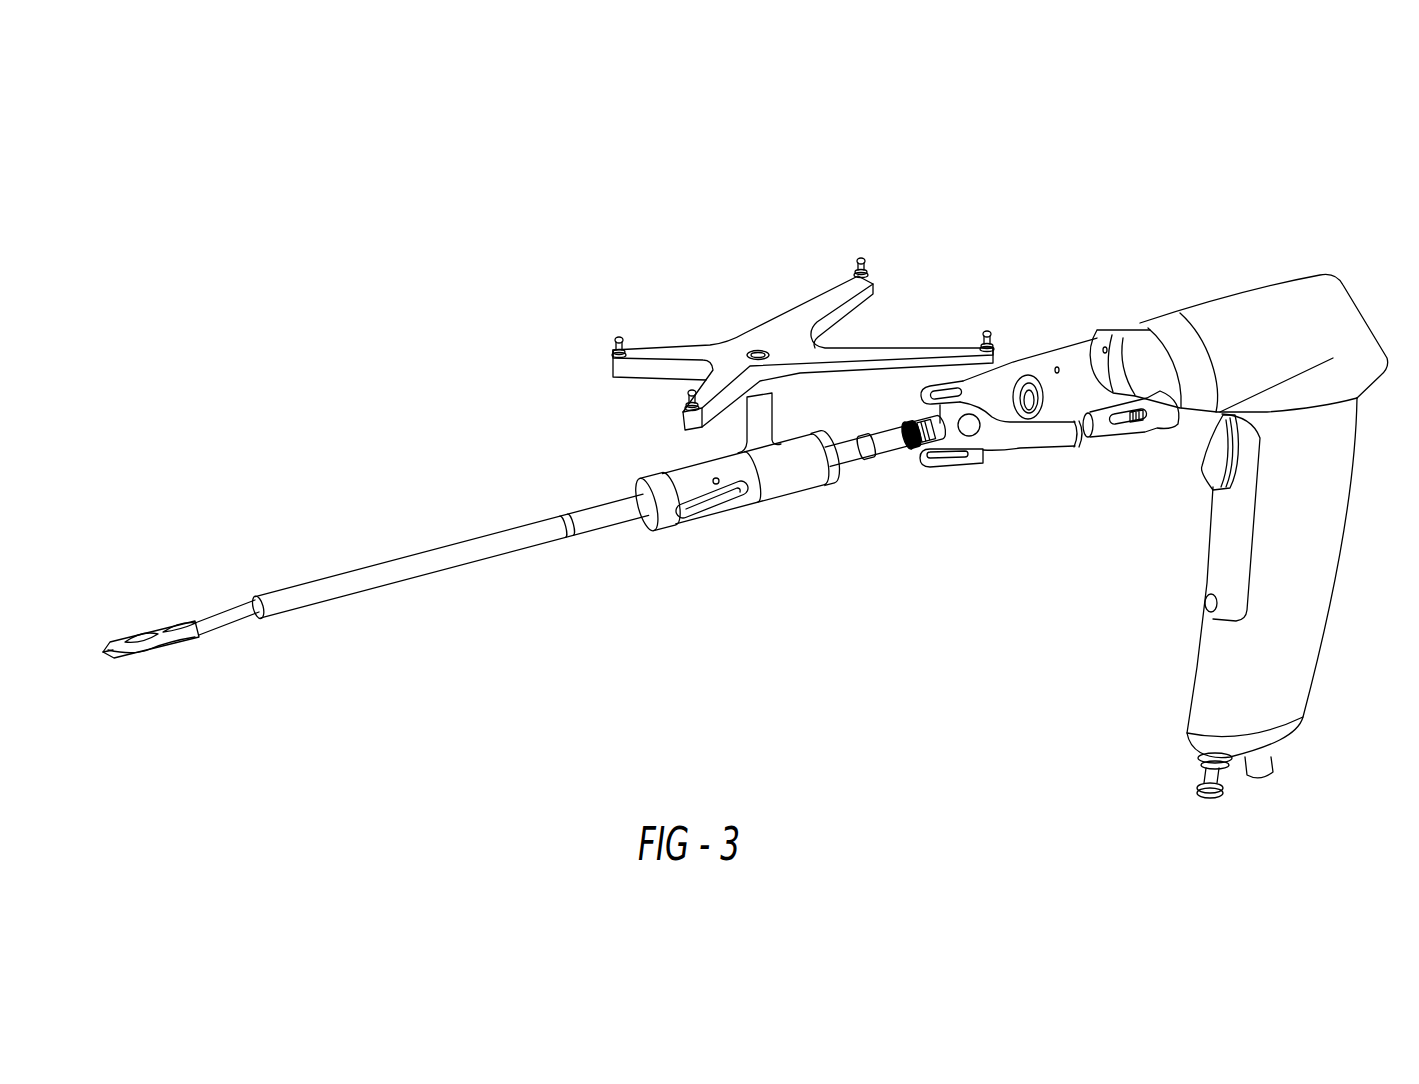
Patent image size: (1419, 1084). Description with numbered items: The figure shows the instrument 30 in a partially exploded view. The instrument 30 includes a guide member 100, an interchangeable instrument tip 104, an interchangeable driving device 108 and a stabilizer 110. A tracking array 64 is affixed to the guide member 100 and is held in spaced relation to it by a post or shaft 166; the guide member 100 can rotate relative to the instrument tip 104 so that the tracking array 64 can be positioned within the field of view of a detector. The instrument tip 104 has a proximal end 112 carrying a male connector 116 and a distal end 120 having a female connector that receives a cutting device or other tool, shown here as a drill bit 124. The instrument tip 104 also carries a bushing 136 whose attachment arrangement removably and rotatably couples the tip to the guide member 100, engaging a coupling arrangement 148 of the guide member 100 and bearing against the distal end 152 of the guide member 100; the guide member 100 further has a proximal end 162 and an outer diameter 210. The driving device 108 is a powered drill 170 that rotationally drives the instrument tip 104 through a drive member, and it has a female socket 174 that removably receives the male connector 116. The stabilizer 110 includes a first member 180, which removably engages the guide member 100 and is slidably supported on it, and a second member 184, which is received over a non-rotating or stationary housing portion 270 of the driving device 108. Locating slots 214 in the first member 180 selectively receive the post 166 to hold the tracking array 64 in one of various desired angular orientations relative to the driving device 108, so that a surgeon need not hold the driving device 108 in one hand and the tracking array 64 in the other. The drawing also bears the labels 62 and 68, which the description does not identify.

The instrument 30 is at (452, 331).
The cross-shaped bracket 62 is at (780, 284).
The tracking array 64 is at (715, 343).
The fastener 68 is at (616, 337).
The guide member 100 is at (547, 579).
The interchangeable instrument tip 104 is at (520, 571).
The interchangeable driving device 108 is at (1336, 631).
The stabilizer 110 is at (1200, 501).
The proximal end 112 is at (918, 437).
The male connector 116 is at (977, 446).
The distal end 120 is at (262, 618).
The drill bit 124 is at (228, 624).
The bushing 136 is at (652, 530).
The coupling arrangement 148 is at (700, 506).
The distal end 152 is at (672, 472).
The proximal end 162 is at (836, 479).
The post 166 is at (775, 418).
The drill 170 is at (1345, 296).
The female socket 174 is at (1030, 407).
The first member 180 is at (1037, 437).
The second member 184 is at (1157, 402).
The outer diameter 210 is at (807, 473).
The locating slots 214 is at (928, 395).
The housing portion 270 is at (1118, 352).